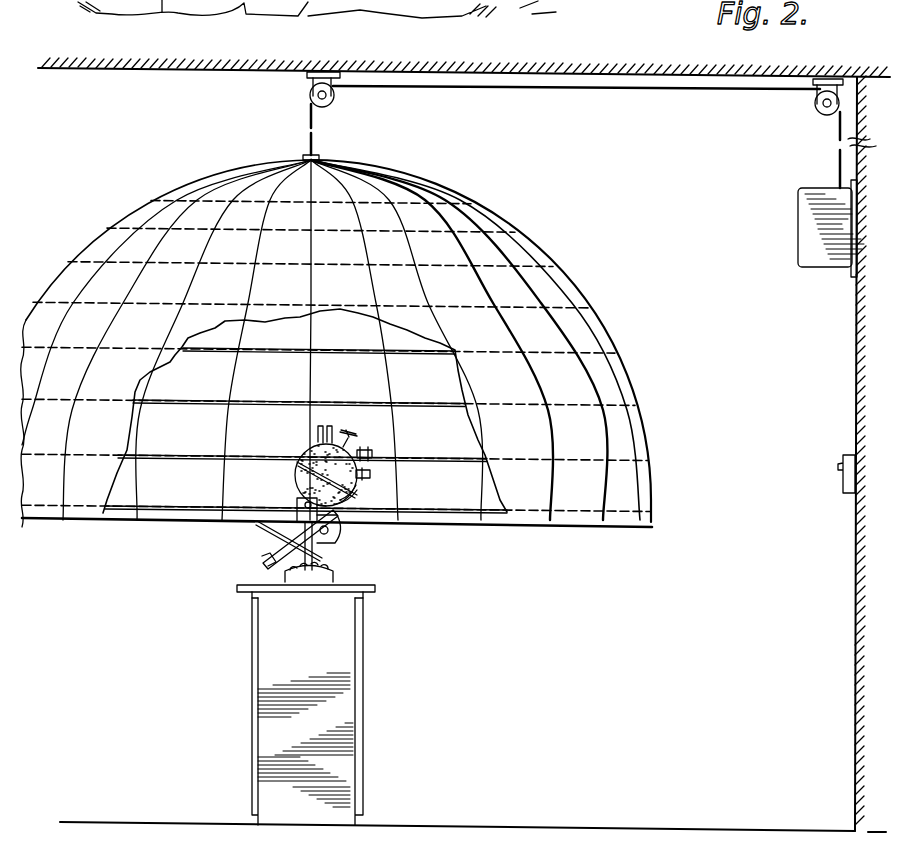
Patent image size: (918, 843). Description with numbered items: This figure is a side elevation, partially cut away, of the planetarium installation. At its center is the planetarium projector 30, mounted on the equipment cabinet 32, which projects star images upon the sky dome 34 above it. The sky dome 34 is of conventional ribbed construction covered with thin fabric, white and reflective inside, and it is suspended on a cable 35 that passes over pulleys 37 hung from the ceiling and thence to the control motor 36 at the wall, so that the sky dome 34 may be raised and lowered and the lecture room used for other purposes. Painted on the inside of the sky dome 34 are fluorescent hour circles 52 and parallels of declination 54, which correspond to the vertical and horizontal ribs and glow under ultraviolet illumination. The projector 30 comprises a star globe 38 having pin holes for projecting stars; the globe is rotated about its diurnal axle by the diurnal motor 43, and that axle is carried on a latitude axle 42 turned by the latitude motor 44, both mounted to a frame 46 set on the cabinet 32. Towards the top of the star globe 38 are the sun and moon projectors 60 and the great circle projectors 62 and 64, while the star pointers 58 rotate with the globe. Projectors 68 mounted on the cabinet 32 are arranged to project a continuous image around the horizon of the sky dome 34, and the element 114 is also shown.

The planetarium projector 30 is at (345, 535).
The equipment cabinet 32 is at (363, 710).
The sky dome 34 is at (352, 343).
The cable 35 is at (305, 142).
The motor 36 is at (798, 230).
The pulleys 37 is at (335, 105).
The star globe 38 is at (297, 464).
The latitude axle 42 is at (287, 511).
The diurnal motor 43 is at (330, 545).
The latitude motor 44 is at (297, 503).
The frame 46 is at (342, 574).
The hour circles 52 is at (393, 442).
The parallels of declination 54 is at (432, 461).
The star pointers 58 is at (266, 538).
The sun and moon projectors 60 is at (329, 425).
The great circle projector 62 is at (348, 432).
The great circle projector 64 is at (370, 452).
The projectors 68 is at (352, 582).
The fitting 114 is at (370, 476).